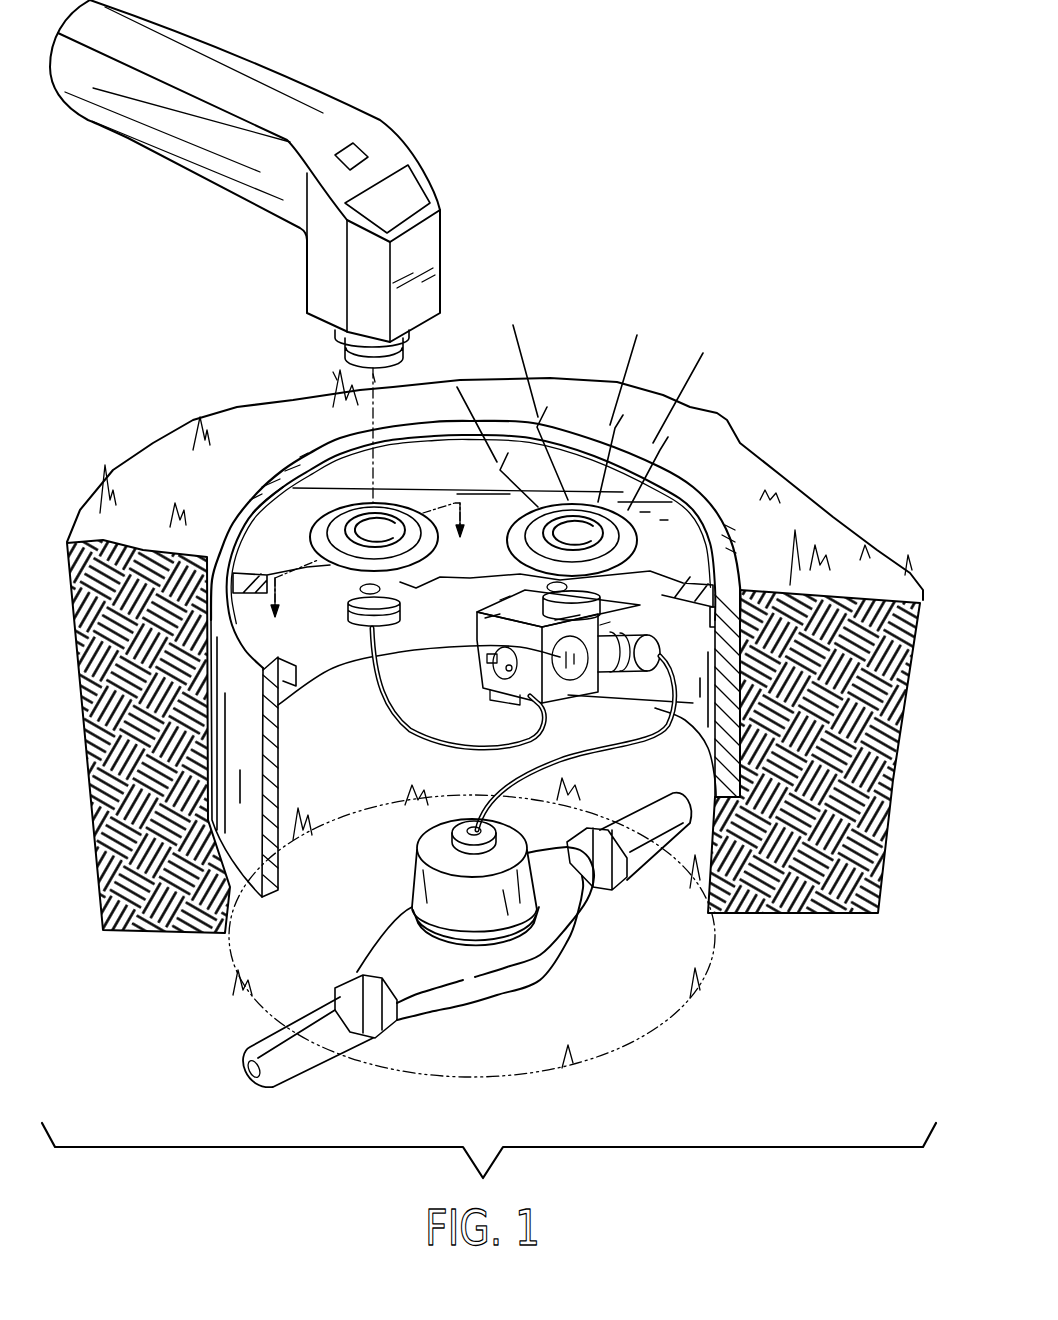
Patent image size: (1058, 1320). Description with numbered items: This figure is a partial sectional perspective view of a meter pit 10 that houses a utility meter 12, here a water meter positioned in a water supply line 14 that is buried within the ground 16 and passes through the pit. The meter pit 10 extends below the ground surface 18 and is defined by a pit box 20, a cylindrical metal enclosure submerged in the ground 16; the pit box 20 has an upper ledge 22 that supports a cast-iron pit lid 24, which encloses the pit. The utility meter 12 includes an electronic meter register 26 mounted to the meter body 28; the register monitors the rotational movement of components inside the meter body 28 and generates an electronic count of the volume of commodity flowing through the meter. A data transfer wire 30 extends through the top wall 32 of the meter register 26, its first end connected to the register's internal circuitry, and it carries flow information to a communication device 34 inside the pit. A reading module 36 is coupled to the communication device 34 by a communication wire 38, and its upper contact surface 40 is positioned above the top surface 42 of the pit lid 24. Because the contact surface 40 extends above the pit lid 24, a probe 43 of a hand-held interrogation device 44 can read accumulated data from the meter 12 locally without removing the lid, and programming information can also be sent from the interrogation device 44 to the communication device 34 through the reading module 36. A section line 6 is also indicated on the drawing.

The section line 6- 6 is at (374, 578).
The meter pit 10 is at (370, 772).
The utility meter 12 is at (570, 927).
The water supply line 14 is at (648, 820).
The ground 16 is at (877, 790).
The ground surface 18 is at (817, 517).
The pit box 20 is at (272, 877).
The upper ledge 22 is at (280, 698).
The pit lid 24 is at (318, 578).
The meter register 26 is at (412, 861).
The meter body 28 is at (470, 982).
The data transfer wire 30 is at (576, 730).
The top wall 32 is at (507, 840).
The communication device 34 is at (655, 606).
The reading module 36 is at (420, 497).
The communication wire 38 is at (420, 716).
The upper contact surface 40 is at (383, 517).
The top surface 42 is at (262, 533).
The probe 43 is at (403, 360).
The interrogation device 44 is at (337, 127).